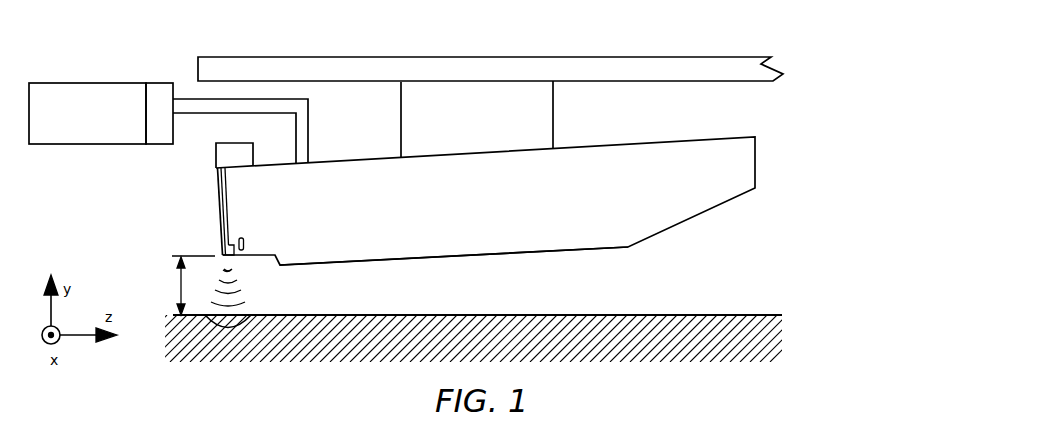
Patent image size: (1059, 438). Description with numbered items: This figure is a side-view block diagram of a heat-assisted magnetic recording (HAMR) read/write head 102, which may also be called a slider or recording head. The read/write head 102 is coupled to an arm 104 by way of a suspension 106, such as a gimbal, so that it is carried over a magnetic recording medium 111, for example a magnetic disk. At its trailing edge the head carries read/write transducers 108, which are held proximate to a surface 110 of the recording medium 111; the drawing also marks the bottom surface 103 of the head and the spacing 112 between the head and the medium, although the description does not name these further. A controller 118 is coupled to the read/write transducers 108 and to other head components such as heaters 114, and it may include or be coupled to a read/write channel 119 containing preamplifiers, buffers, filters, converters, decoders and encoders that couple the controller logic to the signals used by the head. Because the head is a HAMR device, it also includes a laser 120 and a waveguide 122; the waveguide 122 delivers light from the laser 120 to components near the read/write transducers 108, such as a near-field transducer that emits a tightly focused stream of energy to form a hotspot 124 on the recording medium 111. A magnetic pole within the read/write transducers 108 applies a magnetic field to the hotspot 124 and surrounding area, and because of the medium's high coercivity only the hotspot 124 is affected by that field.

The read/write head 102 is at (665, 150).
The bottom surface of print head 103 is at (362, 265).
The arm 104 is at (711, 60).
The suspension 106 is at (556, 110).
The read/write transducers 108 is at (224, 238).
The surface 110 is at (668, 315).
The magnetic recording medium 111 is at (680, 356).
The standoff distance 112 is at (178, 285).
The heaters 114 is at (240, 238).
The controller 118 is at (84, 83).
The read/write channel 119 is at (157, 83).
The laser 120 is at (232, 149).
The waveguide 122 is at (220, 187).
The hotspot 124 is at (245, 316).